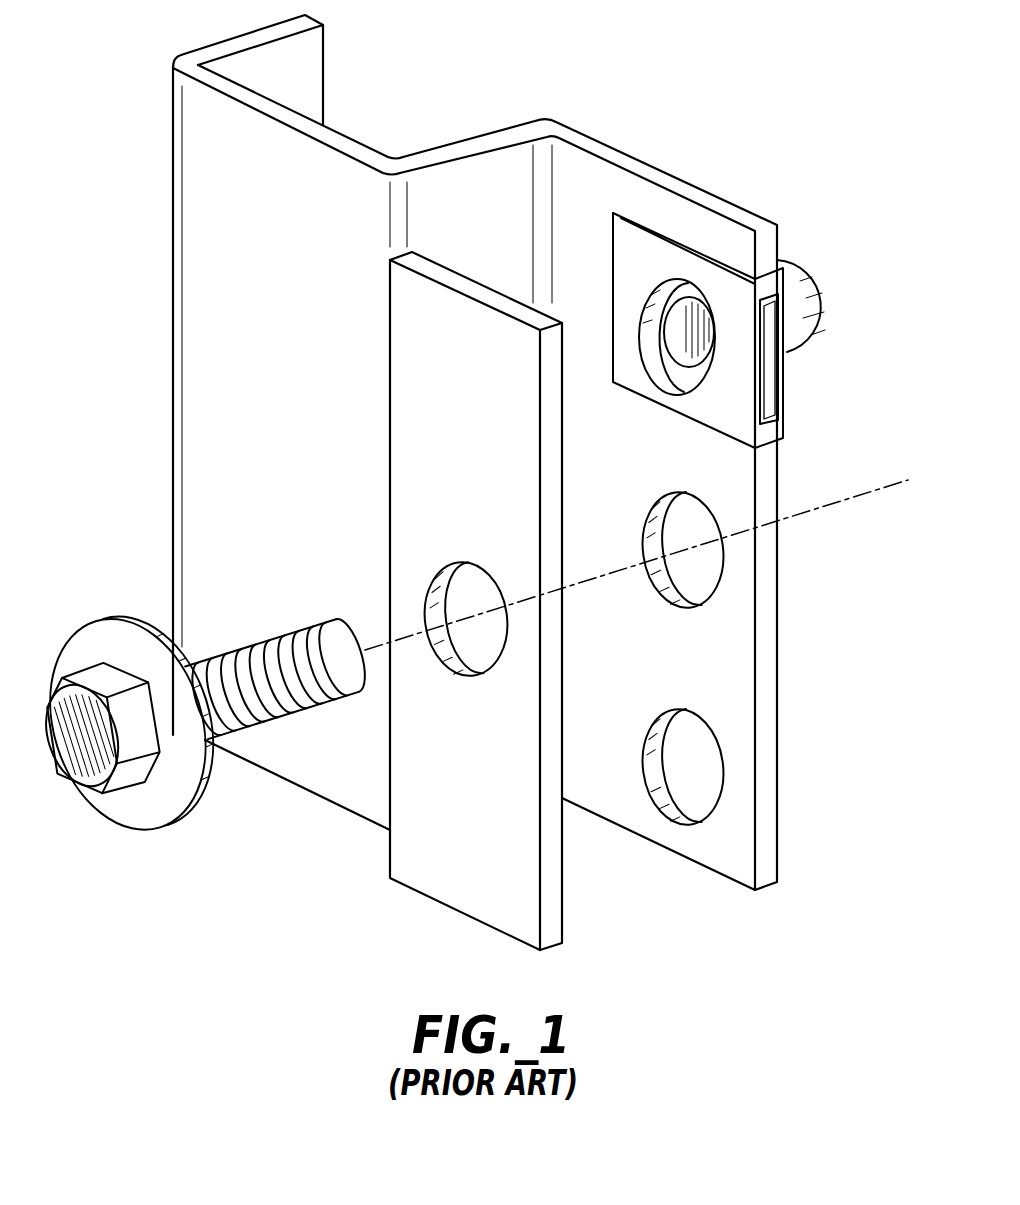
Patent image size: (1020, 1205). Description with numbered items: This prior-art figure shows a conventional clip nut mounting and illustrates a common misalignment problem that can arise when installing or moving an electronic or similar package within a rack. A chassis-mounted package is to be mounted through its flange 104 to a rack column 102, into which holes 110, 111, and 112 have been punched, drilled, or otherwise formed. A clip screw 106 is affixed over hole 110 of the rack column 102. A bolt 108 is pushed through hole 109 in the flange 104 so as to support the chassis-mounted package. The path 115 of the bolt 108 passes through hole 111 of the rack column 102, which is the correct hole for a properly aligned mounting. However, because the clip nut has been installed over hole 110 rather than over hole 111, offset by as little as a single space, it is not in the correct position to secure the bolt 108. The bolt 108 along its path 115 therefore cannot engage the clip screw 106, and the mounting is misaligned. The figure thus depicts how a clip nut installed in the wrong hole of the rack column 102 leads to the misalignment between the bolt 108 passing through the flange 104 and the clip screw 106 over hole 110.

The rack column 102 is at (600, 142).
The flange 104 is at (448, 905).
The clip screw 106 is at (810, 323).
The bolt 108 is at (125, 777).
The hole 109 is at (463, 583).
The hole 110 is at (662, 280).
The hole 111 is at (700, 565).
The hole 112 is at (700, 763).
The path 115 is at (897, 532).